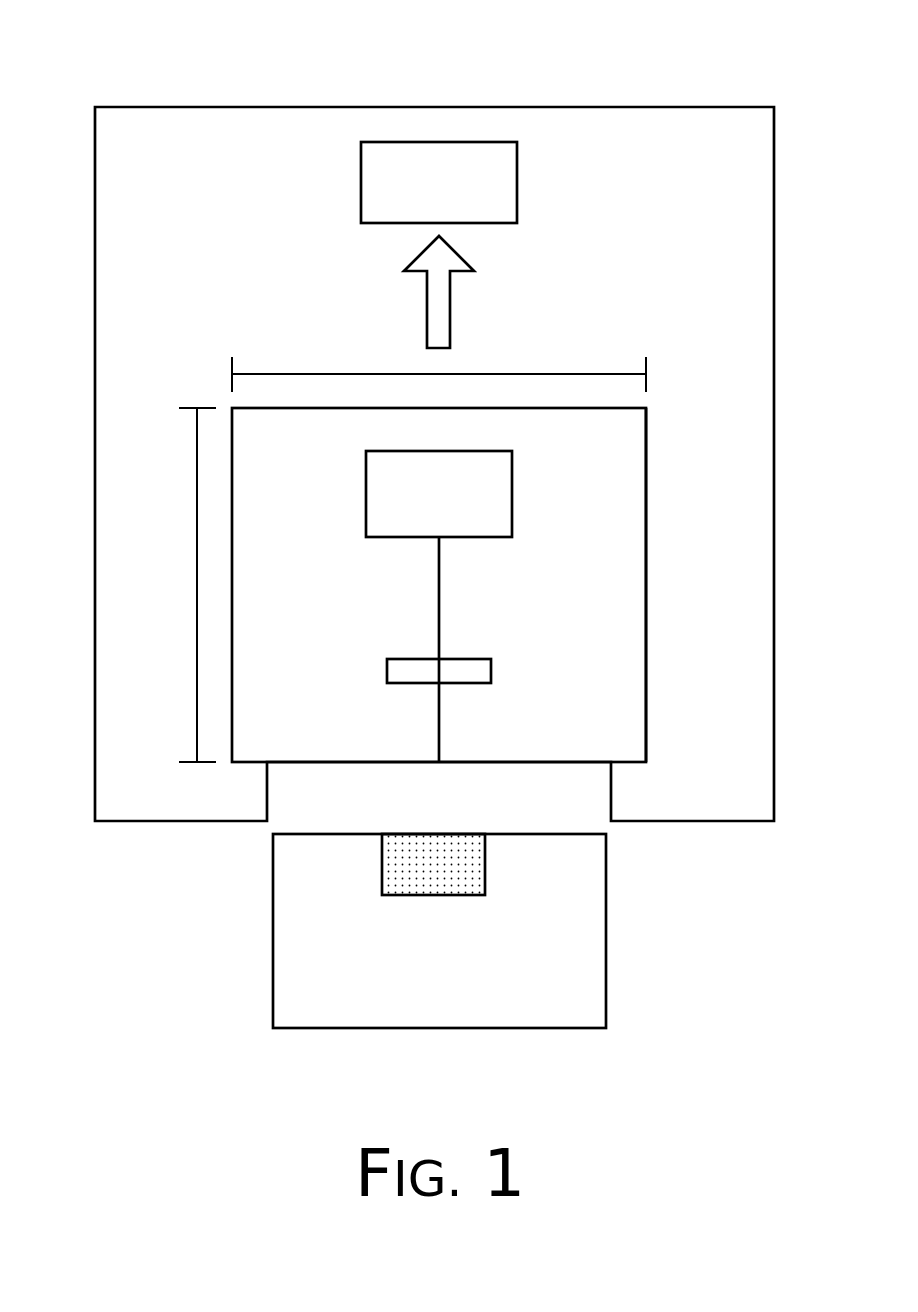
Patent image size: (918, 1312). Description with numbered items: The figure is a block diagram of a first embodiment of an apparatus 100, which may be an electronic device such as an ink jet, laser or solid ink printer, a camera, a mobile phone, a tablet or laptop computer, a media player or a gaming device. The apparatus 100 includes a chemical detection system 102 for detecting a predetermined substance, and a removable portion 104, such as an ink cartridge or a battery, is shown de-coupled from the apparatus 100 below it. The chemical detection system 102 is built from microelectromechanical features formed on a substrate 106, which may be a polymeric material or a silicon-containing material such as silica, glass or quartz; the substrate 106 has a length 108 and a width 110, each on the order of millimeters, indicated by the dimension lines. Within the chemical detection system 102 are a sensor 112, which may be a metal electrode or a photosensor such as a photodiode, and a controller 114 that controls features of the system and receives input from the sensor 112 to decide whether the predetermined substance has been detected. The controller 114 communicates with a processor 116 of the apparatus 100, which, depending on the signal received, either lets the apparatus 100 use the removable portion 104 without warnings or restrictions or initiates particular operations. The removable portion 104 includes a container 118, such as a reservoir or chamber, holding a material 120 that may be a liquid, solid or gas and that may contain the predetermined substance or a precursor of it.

The apparatus 100 is at (96, 67).
The chemical detection system 102 is at (669, 431).
The removable portion 104 is at (606, 933).
The substrate 106 is at (646, 648).
The length 108 is at (197, 605).
The width 110 is at (362, 374).
The sensor 112 is at (561, 707).
The controller 114 is at (547, 494).
The processor 116 is at (517, 180).
The container 118 is at (542, 873).
The material 120 is at (301, 909).